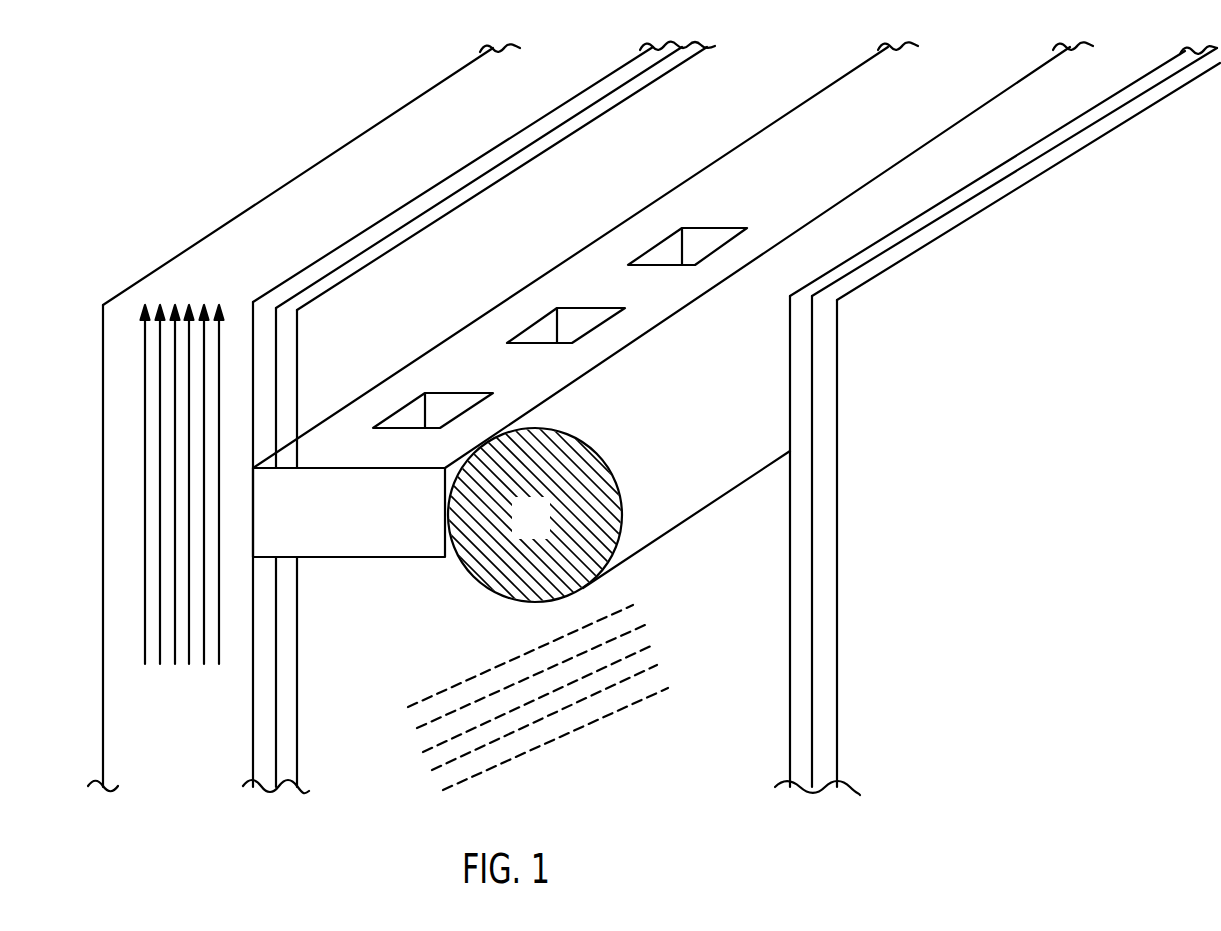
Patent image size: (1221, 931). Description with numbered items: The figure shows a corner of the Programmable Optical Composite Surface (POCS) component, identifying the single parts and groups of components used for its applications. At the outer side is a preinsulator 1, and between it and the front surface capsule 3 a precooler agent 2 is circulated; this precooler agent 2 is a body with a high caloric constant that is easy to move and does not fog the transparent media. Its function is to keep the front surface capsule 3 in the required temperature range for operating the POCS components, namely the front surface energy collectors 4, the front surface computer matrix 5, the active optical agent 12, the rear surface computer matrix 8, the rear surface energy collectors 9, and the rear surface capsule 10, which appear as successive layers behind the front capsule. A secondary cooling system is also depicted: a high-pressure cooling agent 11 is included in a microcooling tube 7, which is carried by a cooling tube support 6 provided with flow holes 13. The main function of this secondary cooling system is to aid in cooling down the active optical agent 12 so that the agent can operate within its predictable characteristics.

The preinsulator 1 is at (272, 195).
The precooler agent 2 is at (177, 307).
The front surface capsule 3 is at (432, 189).
The front surface energy collectors 4 is at (483, 175).
The front surface computer matrix 5 is at (540, 154).
The cooling tube support 6 is at (660, 199).
The microcooling tube 7 is at (855, 192).
The rear surface computer matrix 8 is at (980, 178).
The rear surface energy collectors 9 is at (1027, 164).
The rear surface capsule 10 is at (1083, 148).
The high-pressure cooling agent 11 is at (543, 533).
The active optical agent 12 is at (530, 697).
The flow holes 13 is at (408, 413).